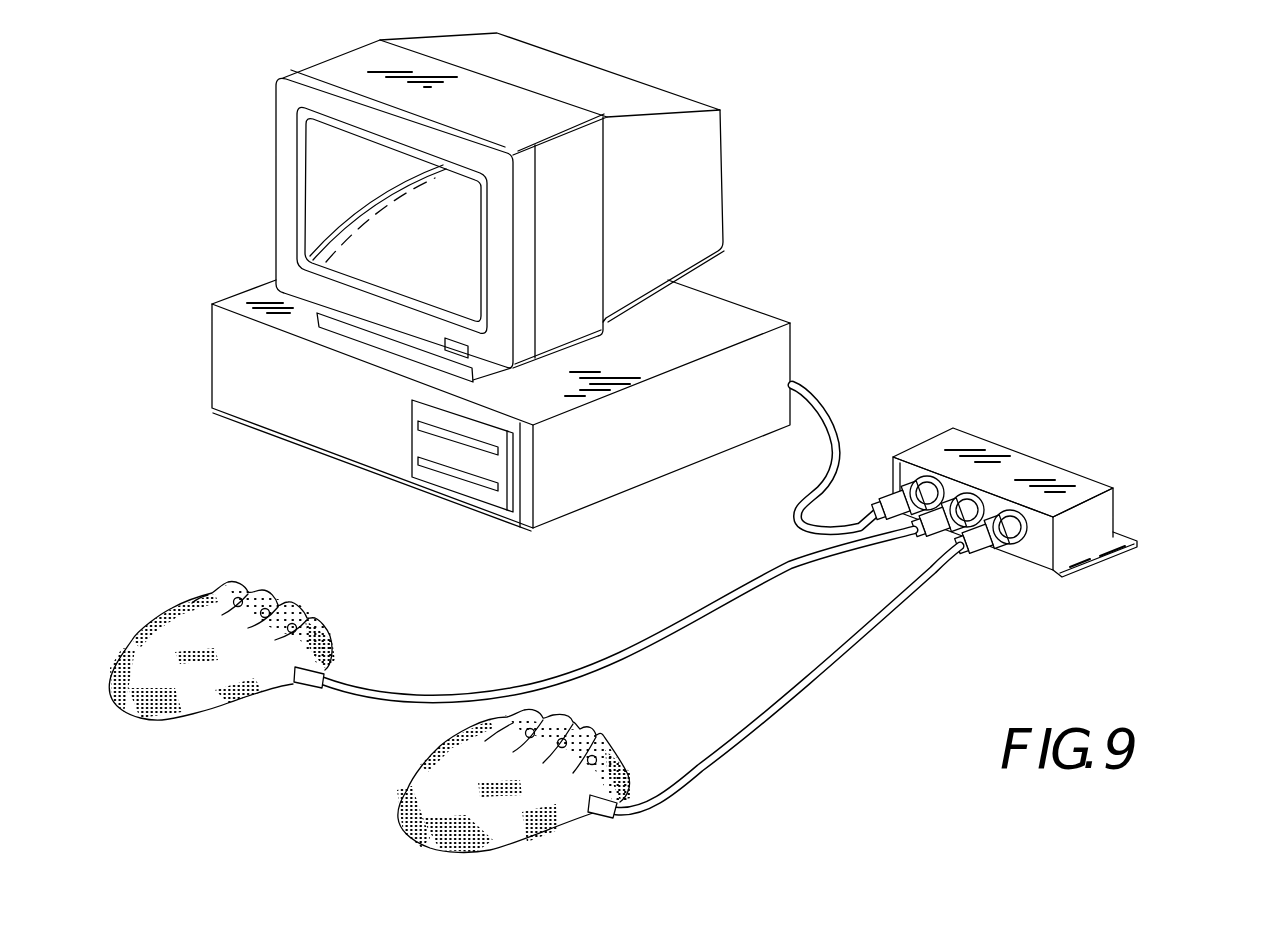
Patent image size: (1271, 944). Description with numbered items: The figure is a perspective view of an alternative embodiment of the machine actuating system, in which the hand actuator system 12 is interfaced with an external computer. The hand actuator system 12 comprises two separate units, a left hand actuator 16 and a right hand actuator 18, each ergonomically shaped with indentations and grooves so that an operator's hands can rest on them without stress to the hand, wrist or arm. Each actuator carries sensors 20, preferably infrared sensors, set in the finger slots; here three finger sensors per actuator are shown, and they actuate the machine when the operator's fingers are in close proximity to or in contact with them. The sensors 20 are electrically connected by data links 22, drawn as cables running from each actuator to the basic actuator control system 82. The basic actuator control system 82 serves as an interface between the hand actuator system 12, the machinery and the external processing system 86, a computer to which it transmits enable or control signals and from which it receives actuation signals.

The hand actuator system 12 is at (511, 683).
The left hand actuator 16 is at (117, 658).
The right hand actuator 18 is at (397, 800).
The sensors 20 is at (240, 600).
The data links 22 is at (437, 693).
The basic actuator control system 82 is at (1082, 443).
The external processing system 86 is at (768, 291).